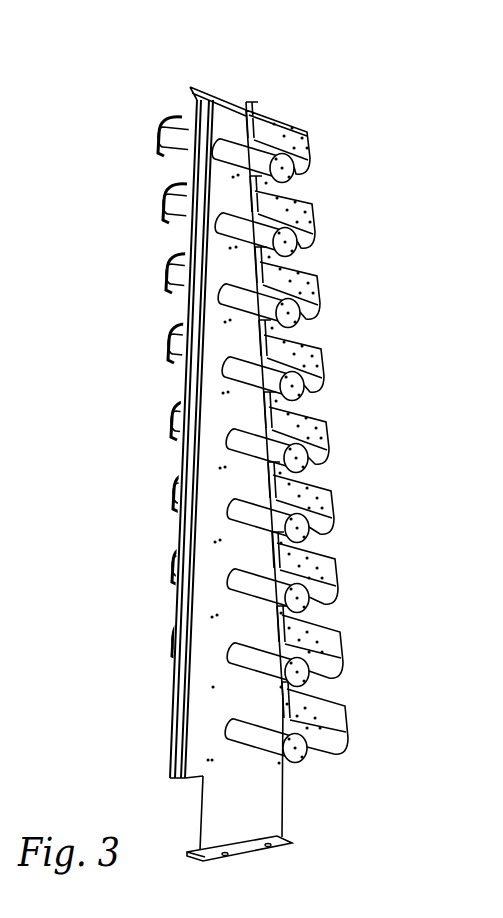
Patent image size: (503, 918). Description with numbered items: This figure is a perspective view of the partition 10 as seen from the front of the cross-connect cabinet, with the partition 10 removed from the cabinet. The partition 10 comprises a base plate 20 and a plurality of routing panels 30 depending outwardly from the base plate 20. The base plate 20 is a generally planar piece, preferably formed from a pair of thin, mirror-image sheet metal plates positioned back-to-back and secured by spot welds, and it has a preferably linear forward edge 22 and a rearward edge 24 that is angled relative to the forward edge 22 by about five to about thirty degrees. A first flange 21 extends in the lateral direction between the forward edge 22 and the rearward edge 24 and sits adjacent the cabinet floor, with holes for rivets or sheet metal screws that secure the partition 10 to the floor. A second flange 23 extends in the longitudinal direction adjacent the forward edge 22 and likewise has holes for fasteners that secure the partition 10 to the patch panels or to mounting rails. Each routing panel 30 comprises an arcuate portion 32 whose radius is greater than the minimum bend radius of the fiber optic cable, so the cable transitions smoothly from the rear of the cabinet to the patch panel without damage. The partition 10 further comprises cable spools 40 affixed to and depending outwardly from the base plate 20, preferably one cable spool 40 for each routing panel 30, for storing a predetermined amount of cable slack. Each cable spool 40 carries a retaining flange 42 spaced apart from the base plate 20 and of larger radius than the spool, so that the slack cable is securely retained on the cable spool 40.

The partition 10 is at (285, 464).
The base plate 20 is at (180, 432).
The first flange 21 is at (277, 851).
The forward edge 22 is at (184, 462).
The second flange 23 is at (177, 605).
The rearward edge 24 is at (283, 807).
The routing panel 30 is at (268, 122).
The arcuate portion 32 is at (330, 384).
The cable spool 40 is at (180, 138).
The retaining flange 42 is at (175, 341).